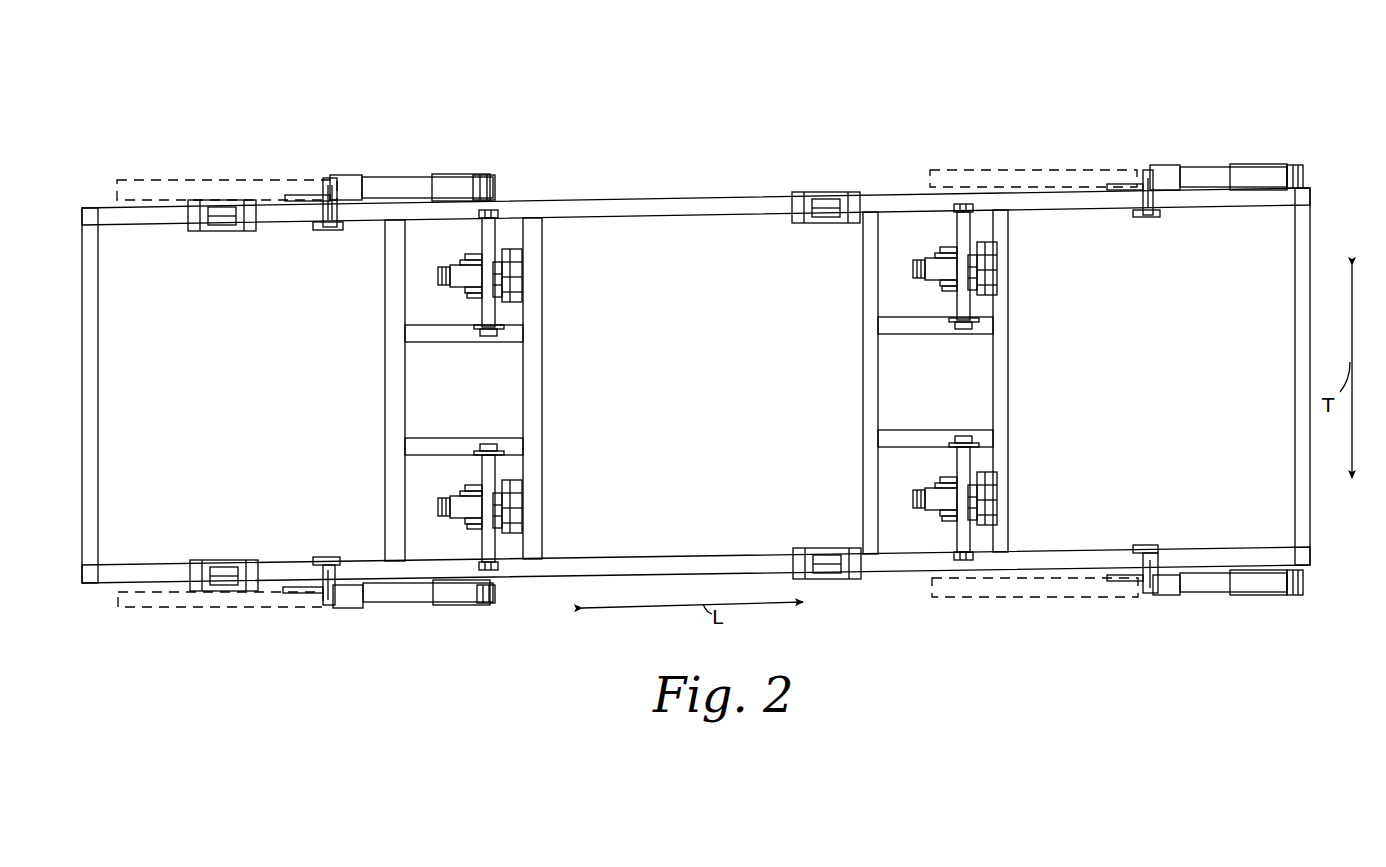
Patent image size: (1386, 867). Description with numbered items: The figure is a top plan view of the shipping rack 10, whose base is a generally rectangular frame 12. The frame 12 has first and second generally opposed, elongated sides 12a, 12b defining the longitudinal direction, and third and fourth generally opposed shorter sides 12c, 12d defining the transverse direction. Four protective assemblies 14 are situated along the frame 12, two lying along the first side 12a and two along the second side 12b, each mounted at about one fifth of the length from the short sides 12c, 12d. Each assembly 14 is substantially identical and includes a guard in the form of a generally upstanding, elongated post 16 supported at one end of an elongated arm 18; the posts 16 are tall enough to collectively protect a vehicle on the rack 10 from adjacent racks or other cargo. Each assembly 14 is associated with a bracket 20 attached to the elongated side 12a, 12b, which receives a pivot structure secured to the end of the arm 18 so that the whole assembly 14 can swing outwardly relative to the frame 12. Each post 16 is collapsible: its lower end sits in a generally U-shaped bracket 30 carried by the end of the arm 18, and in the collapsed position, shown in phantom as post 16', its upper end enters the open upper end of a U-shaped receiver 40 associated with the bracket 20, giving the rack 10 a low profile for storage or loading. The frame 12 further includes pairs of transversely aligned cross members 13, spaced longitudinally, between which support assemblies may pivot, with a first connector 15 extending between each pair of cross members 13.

The shipping rack 10 is at (714, 123).
The frame 12 is at (1332, 158).
The first elongated side 12a is at (660, 563).
The second elongated side 12b is at (716, 218).
The third shorter side 12c is at (93, 402).
The fourth shorter side 12d is at (1293, 345).
The cross members 13 is at (384, 400).
The protective assembly 14 is at (312, 150).
The first connector 15 is at (458, 438).
The post 16 is at (899, 400).
The post in collapsed position 16' is at (627, 422).
The arm 18 is at (1228, 168).
The bracket 20 is at (337, 230).
The U-shaped bracket 30 is at (455, 603).
The U-shaped receiver 40 is at (1168, 168).